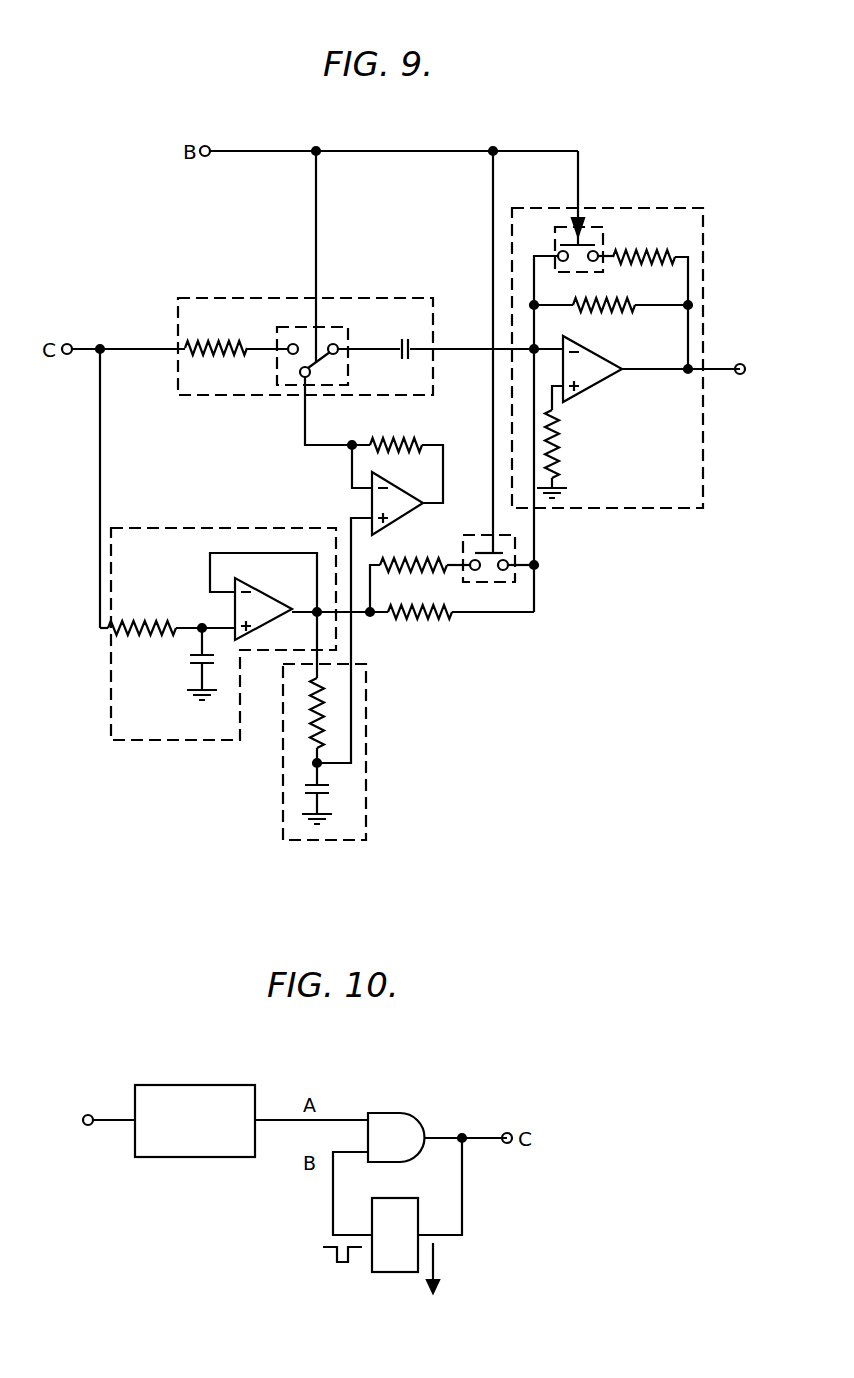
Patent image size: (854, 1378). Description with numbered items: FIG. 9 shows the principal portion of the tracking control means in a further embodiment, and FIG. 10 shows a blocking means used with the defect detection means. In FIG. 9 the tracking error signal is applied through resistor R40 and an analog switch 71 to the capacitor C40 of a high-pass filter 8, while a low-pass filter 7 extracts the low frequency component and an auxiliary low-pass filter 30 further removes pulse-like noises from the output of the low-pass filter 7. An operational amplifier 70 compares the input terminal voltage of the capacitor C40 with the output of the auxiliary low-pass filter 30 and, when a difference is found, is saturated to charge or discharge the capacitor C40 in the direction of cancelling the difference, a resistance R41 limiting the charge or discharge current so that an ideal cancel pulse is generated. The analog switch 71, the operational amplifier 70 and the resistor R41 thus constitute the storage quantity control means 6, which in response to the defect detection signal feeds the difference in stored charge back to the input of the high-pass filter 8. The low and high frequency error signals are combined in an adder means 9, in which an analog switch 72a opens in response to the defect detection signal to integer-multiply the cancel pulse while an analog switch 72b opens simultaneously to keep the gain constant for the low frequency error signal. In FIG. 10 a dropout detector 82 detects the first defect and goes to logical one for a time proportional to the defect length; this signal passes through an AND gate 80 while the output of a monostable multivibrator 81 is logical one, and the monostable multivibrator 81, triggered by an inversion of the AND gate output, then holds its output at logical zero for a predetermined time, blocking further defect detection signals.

In FIG. 9, the storage quantity control means 6 is at (370, 314).
In FIG. 9, the high-pass filter 8 is at (370, 314).
In FIG. 9, the adder means 9 is at (636, 381).
In FIG. 9, the analog switch 71 is at (275, 362).
In FIG. 9, the resistor R40 is at (239, 338).
In FIG. 9, the capacitor C40 is at (404, 340).
In FIG. 9, the resistance R41 is at (398, 440).
In FIG. 9, the operational amplifier 70 is at (412, 510).
In FIG. 9, the analog switch 72a is at (605, 233).
In FIG. 9, the analog switch 72b is at (515, 582).
In FIG. 9, the low-pass filter 7 is at (185, 745).
In FIG. 9, the auxiliary low-pass filter 30 is at (367, 800).
In FIG. 10, the dropout detector 82 is at (225, 1085).
In FIG. 10, the AND gate 80 is at (417, 1112).
In FIG. 10, the monostable multivibrator 81 is at (405, 1198).